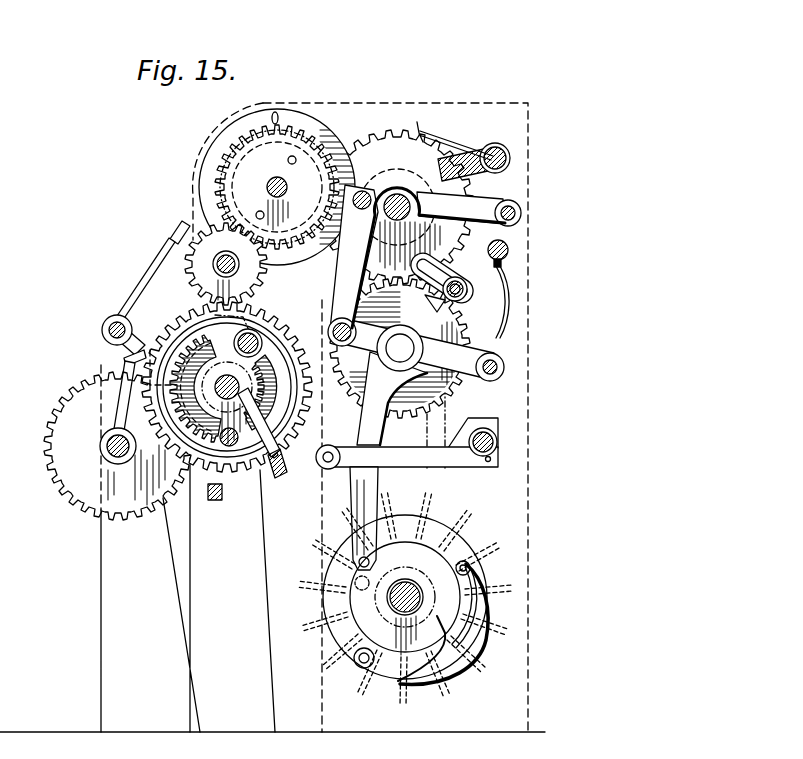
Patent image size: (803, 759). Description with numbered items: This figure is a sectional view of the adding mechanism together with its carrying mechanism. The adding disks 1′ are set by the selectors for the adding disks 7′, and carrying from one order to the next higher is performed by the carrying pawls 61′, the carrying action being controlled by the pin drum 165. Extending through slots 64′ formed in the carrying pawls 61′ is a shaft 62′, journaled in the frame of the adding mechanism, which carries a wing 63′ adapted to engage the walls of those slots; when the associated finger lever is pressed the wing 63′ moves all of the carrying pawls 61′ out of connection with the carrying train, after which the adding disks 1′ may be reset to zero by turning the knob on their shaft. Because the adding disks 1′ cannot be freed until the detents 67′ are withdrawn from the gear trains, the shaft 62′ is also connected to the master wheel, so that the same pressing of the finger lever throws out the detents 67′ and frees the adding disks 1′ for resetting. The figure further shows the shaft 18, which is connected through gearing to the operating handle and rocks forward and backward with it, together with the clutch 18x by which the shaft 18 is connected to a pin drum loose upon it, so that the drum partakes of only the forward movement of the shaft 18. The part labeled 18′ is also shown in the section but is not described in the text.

The adding disks 1′ is at (212, 157).
The detents 67′ is at (172, 232).
The selectors for the adding disks 7′ is at (182, 318).
The carrying pawls 61′ is at (478, 268).
The shaft 62′ is at (473, 296).
The wing 63′ is at (468, 292).
The slots 64′ is at (468, 288).
The pin drum 165 is at (466, 539).
The shaft 18 is at (389, 598).
The brake band 18′ is at (440, 625).
The clutch 18x is at (449, 625).